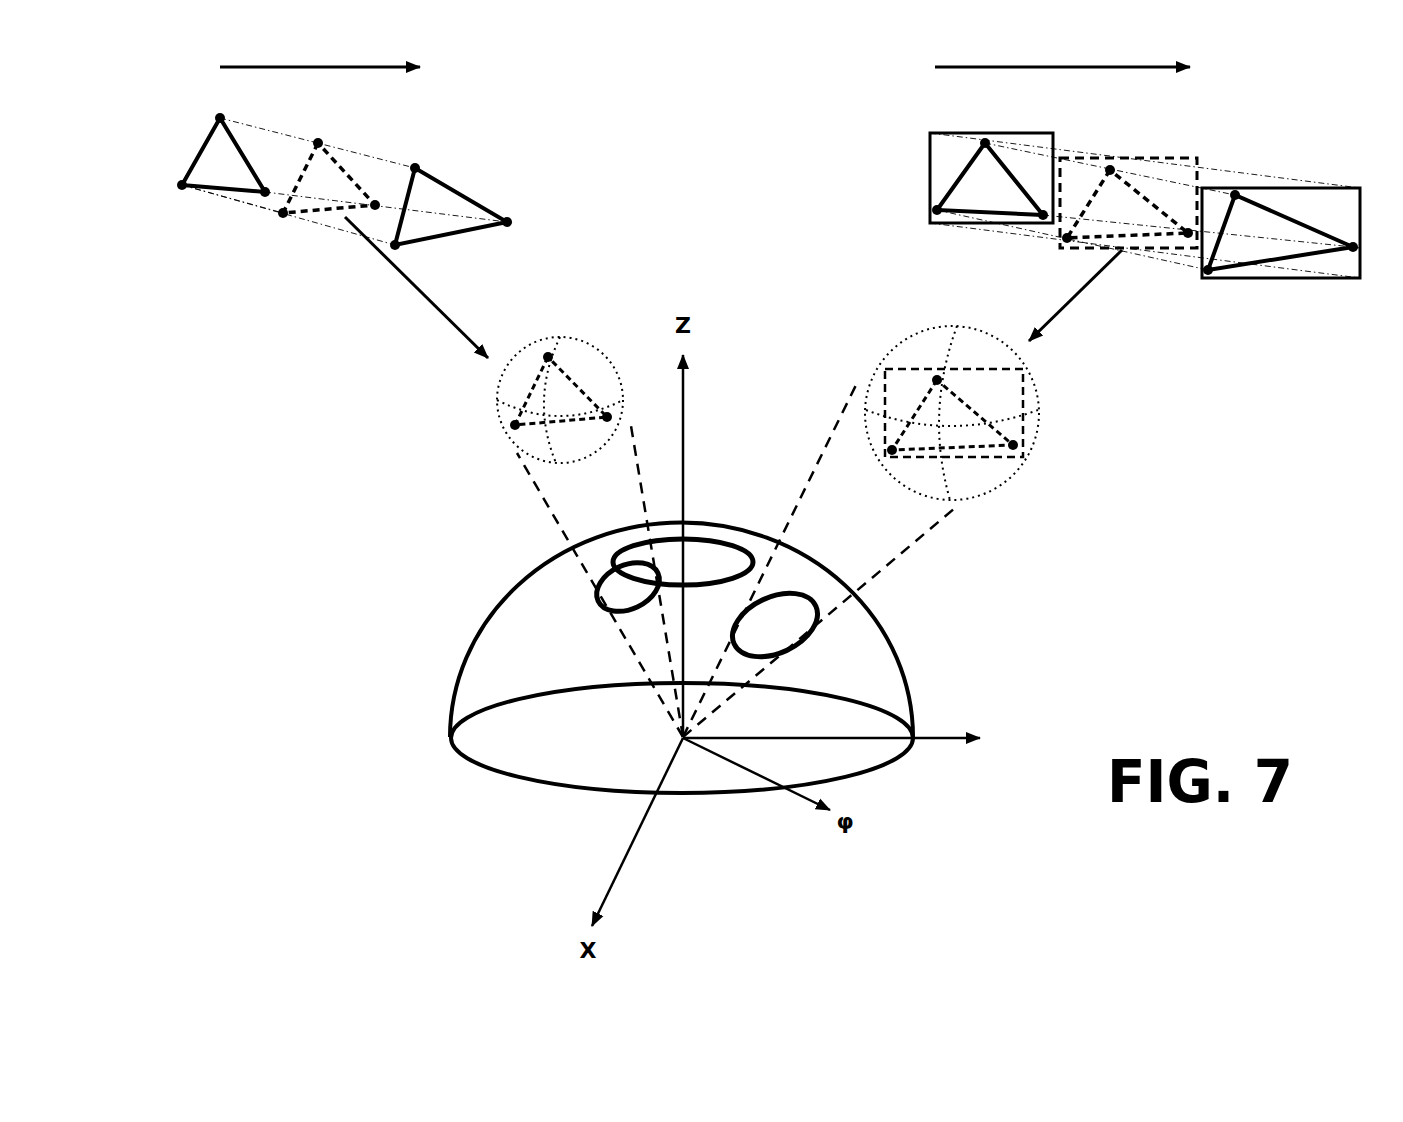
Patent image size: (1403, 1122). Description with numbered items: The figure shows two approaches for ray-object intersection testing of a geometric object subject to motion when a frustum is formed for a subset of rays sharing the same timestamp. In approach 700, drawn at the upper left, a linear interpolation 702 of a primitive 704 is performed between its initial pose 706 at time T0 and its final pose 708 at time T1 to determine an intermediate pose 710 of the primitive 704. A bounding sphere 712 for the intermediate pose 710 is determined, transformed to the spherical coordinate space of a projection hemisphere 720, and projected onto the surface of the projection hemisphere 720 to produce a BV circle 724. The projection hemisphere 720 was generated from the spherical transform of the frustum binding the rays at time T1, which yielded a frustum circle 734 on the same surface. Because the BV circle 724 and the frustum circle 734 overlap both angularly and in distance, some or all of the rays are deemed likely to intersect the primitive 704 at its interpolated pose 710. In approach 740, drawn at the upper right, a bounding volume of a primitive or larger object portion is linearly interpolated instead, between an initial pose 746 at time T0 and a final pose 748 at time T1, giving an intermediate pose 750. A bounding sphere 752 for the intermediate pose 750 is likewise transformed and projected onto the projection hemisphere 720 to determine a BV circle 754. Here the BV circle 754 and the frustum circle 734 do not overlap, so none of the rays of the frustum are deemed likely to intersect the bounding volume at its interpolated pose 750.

The approach 700 is at (491, 62).
The linear interpolation 702 is at (374, 131).
The primitive 704 is at (201, 150).
The initial pose 706 is at (212, 202).
The final pose 708 is at (477, 243).
The intermediate pose 710 is at (297, 227).
The bounding sphere 712 is at (501, 424).
The projection hemisphere 720 is at (912, 689).
The BV circle 724 is at (622, 612).
The frustum circle 734 is at (712, 538).
The approach 740 is at (1277, 119).
The initial pose 746 is at (929, 156).
The final pose 748 is at (1230, 285).
The intermediate pose 750 is at (1078, 253).
The unit sphere projection of bounding box 752 is at (1041, 432).
The BV circle 754 is at (809, 641).